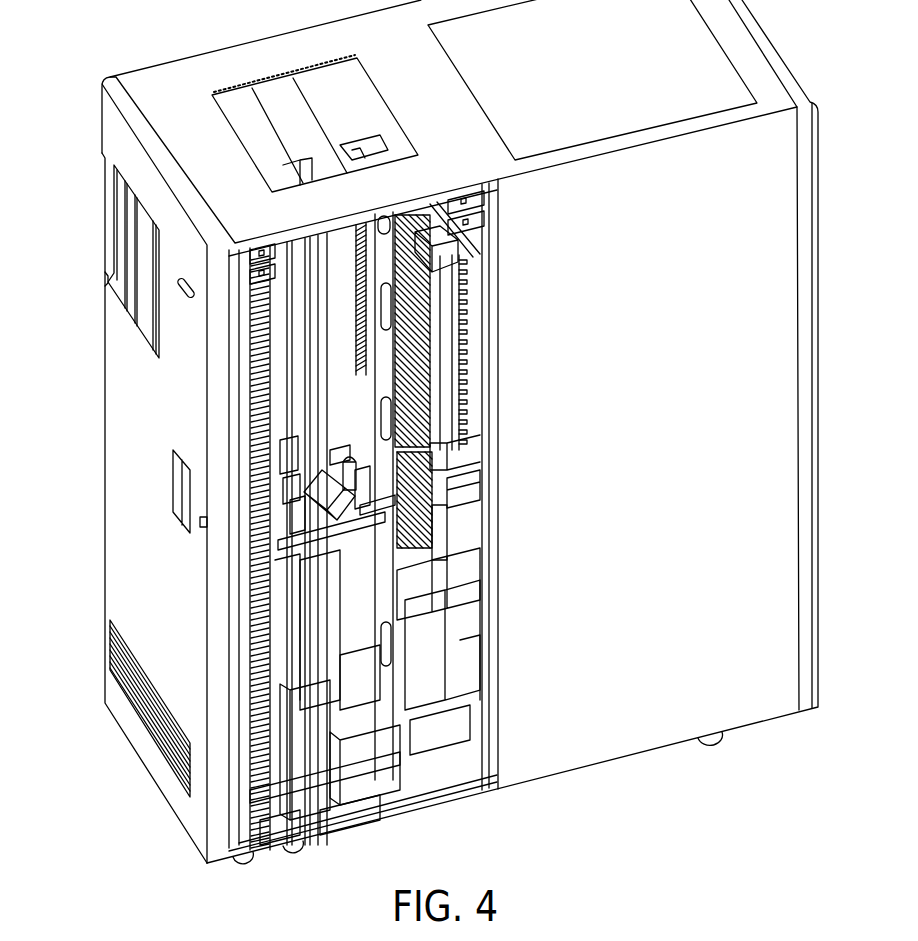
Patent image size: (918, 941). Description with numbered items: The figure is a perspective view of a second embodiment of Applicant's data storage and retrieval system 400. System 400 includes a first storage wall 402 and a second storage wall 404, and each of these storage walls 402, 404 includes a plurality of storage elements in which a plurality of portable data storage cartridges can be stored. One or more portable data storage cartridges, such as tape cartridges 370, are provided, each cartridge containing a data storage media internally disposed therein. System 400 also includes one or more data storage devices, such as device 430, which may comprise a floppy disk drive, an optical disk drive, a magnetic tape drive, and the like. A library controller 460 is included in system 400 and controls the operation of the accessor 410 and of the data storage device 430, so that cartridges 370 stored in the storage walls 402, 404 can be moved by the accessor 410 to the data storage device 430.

The system 400 is at (647, 750).
The first storage wall 402 is at (443, 302).
The second storage wall 404 is at (248, 377).
The accessor 410 is at (276, 492).
The tape cartridges 370 is at (443, 450).
The data storage device 430 is at (437, 537).
The library controller 460 is at (437, 580).